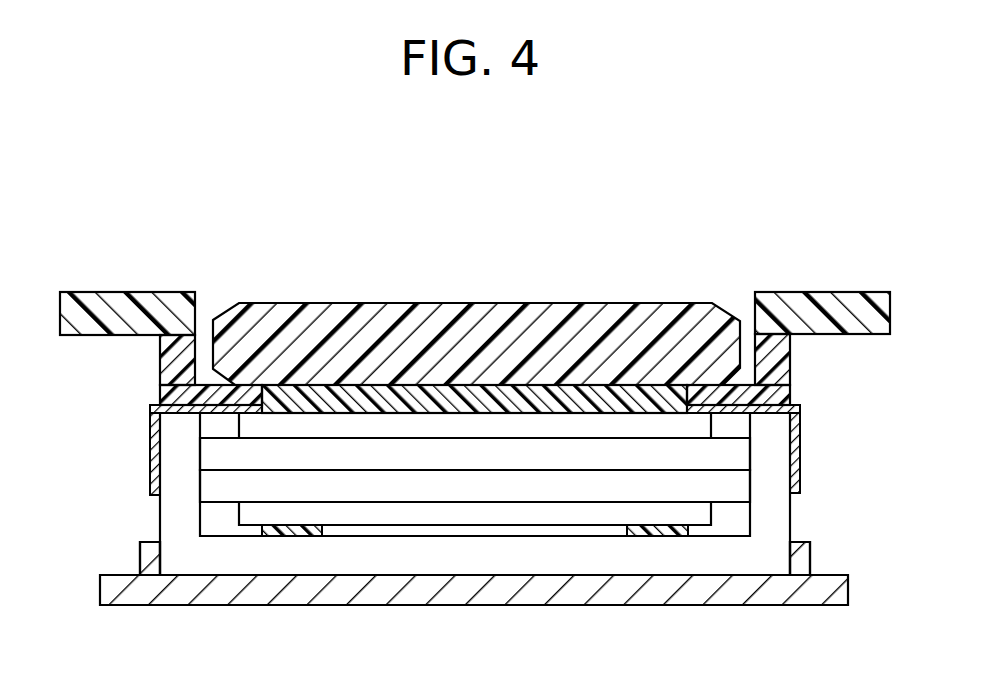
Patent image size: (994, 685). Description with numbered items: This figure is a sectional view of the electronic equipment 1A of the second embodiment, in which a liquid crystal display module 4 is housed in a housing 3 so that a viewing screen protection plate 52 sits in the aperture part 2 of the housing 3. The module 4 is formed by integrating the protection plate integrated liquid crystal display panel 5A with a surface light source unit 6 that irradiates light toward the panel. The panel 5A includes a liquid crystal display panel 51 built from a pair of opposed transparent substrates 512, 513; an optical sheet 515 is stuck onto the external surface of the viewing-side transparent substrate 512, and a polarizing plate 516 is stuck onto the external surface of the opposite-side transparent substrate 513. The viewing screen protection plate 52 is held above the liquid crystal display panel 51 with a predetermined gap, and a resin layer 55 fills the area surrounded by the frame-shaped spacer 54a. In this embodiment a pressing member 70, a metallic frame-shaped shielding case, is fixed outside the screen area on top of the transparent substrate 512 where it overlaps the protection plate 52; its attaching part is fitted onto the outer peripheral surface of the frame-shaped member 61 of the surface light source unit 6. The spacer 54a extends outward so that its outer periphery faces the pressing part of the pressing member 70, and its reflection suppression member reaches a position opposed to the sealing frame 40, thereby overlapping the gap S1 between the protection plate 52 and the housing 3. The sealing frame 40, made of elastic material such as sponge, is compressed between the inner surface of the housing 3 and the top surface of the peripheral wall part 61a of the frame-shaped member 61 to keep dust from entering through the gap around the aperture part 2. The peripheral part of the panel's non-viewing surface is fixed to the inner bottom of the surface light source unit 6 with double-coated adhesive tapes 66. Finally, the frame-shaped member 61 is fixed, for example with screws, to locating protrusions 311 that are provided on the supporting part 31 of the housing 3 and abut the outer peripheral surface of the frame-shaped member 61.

The electronic equipment 1A is at (524, 145).
The aperture part 2 is at (197, 333).
The housing 3 is at (86, 300).
The liquid crystal display module 4 is at (474, 270).
The protection plate integrated liquid crystal display panel 5A is at (432, 528).
The surface light source unit 6 is at (522, 494).
The supporting part 31 is at (478, 602).
The sealing frame 40 is at (166, 350).
The liquid crystal display panel 51 is at (417, 533).
The viewing screen protection plate 52 is at (370, 303).
The spacer 54a is at (205, 386).
The resin layer 55 is at (553, 400).
The frame-shaped member 61 is at (773, 523).
The peripheral wall part 61a is at (772, 427).
The double-coated adhesive tapes 66 is at (290, 536).
The pressing member 70 is at (152, 427).
The locating protrusions 311 is at (152, 557).
The transparent substrate 512 is at (213, 458).
The transparent substrate 513 is at (213, 488).
The optical sheet 515 is at (477, 427).
The polarizing plate 516 is at (553, 513).
The gap S1 is at (204, 335).